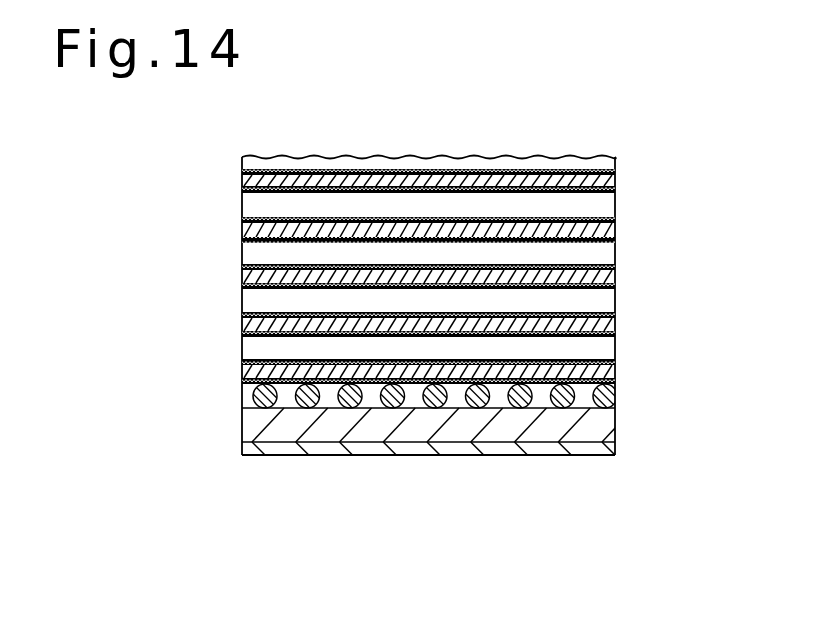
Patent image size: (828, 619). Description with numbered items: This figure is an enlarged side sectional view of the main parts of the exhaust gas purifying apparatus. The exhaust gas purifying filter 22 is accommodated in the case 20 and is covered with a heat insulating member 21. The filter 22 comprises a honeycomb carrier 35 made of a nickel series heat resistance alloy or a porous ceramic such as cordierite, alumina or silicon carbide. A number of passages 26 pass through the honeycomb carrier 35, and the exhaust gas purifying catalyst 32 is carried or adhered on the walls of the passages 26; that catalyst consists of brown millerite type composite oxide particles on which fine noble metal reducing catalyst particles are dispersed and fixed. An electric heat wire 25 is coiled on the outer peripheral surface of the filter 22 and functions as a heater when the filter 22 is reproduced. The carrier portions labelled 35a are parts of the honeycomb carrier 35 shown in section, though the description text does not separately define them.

The case 20 is at (276, 455).
The heat insulating member 21 is at (258, 428).
The exhaust gas purifying filter 22 is at (283, 152).
The electric heat wire 25 is at (614, 395).
The passages 26 is at (262, 300).
The exhaust gas purifying catalyst 32 is at (594, 216).
The honeycomb carrier 35 is at (505, 157).
The metal layer 35a is at (258, 231).